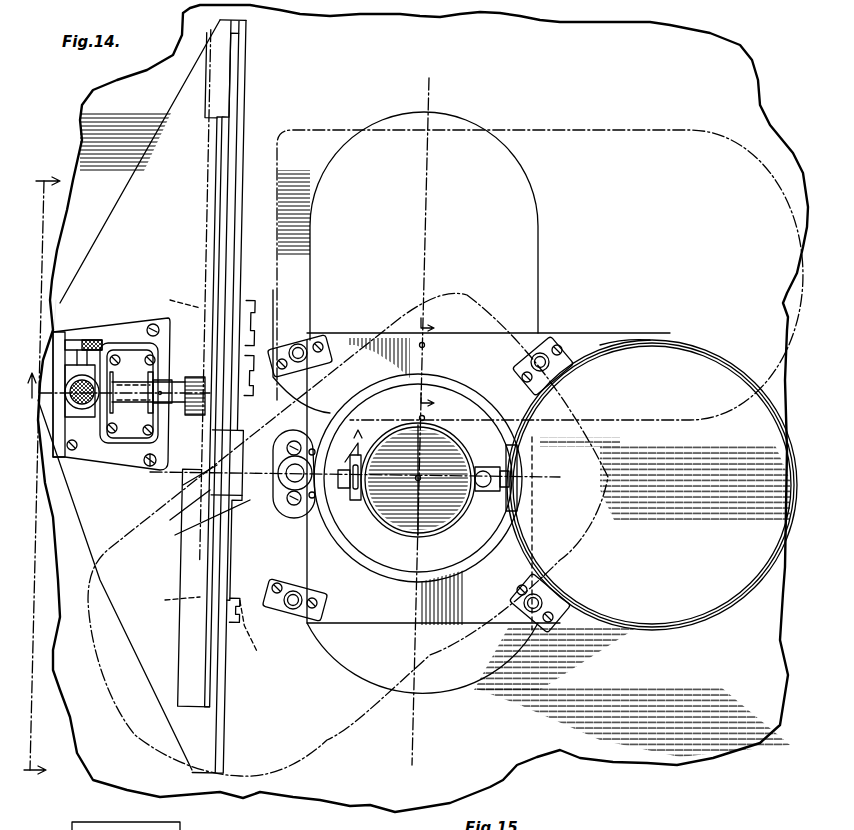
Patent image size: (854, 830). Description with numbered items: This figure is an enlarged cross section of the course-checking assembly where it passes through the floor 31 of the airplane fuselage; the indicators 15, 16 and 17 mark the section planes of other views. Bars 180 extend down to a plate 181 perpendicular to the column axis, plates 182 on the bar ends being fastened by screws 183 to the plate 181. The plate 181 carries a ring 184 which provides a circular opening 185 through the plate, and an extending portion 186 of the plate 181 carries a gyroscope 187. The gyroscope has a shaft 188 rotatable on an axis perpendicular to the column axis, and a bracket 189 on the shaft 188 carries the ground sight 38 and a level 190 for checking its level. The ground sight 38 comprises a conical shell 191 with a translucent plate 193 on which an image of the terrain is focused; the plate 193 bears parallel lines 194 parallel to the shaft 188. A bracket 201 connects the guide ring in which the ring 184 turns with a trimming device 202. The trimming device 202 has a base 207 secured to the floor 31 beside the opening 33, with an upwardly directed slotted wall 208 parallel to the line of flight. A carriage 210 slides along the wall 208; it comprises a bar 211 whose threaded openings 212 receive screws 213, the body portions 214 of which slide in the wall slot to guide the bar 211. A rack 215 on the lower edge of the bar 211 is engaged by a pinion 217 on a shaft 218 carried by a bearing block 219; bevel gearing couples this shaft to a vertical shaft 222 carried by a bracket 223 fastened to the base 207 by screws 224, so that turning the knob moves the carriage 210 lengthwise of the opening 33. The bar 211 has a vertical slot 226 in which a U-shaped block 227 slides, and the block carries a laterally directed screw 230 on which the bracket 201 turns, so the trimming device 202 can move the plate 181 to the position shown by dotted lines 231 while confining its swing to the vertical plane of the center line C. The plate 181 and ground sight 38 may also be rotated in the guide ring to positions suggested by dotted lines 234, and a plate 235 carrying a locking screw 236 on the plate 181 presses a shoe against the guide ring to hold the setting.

The section line 15 is at (201, 404).
The section line 16 is at (429, 361).
The section line 17 is at (41, 475).
The floor 31 is at (92, 762).
The opening 33 is at (540, 243).
The ground sight 38 is at (460, 515).
The bars 180 is at (296, 343).
The plate 181 is at (490, 630).
The plates 182 is at (320, 340).
The screws 183 is at (290, 360).
The ring 184 is at (360, 572).
The opening 185 is at (455, 572).
The extending portion 186 is at (593, 340).
The gyroscope 187 is at (770, 420).
The shaft 188 is at (510, 481).
The bracket 189 is at (490, 471).
The level 190 is at (352, 498).
The conical shell 191 is at (470, 460).
The translucent plate 193 is at (385, 520).
The parallel lines 194 is at (440, 445).
The bracket 201 is at (238, 518).
The trimming device 202 is at (89, 461).
The base 207 is at (138, 622).
The wall 208 is at (228, 690).
The carriage 210 is at (230, 462).
The bar 211 is at (210, 553).
The threaded openings 212 is at (190, 380).
The screws 213 is at (250, 632).
The body portions 214 is at (236, 352).
The rack 215 is at (183, 620).
The pinion 217 is at (192, 377).
The shaft 218 is at (109, 382).
The bearing block 219 is at (130, 360).
The vertical shaft 222 is at (82, 405).
The bracket 223 is at (52, 470).
The screws 224 is at (150, 324).
The vertical slot 226 is at (179, 493).
The block 227 is at (195, 523).
The screw 230 is at (302, 440).
The dotted lines 231 is at (562, 130).
The dotted lines 234 is at (448, 293).
The plate 235 is at (312, 505).
The locking screw 236 is at (303, 503).
The center line C is at (419, 414).